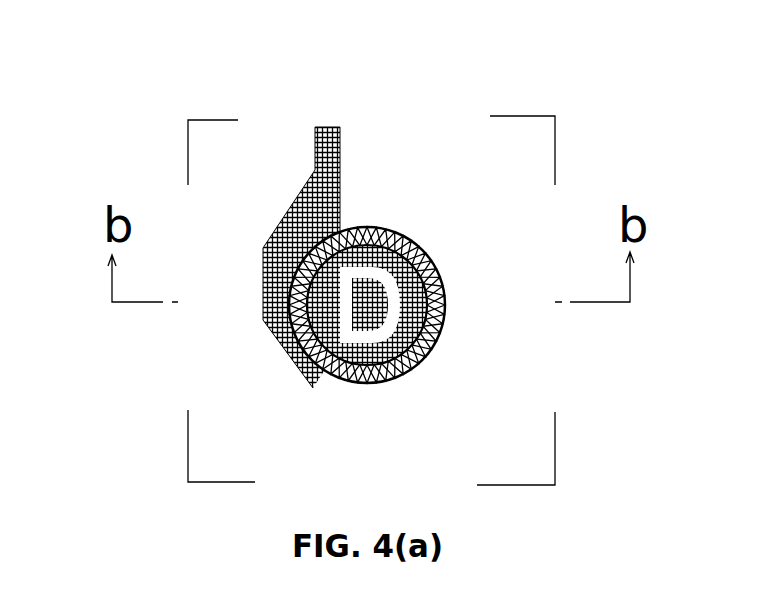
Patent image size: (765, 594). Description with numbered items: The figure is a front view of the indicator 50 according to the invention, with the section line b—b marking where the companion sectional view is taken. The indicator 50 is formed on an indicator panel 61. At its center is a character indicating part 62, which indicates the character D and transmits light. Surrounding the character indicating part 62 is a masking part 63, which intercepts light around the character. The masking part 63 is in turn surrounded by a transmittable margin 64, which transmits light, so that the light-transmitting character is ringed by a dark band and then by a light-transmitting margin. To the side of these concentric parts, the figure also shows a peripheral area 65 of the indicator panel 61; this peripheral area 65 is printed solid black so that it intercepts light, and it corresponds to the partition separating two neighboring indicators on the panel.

The indicator 50 is at (155, 87).
The indicator panel 61 is at (525, 110).
The character indicating part 62 is at (417, 368).
The masking part 63 is at (392, 232).
The transmittable margin 64 is at (427, 265).
The peripheral area 65 is at (322, 133).